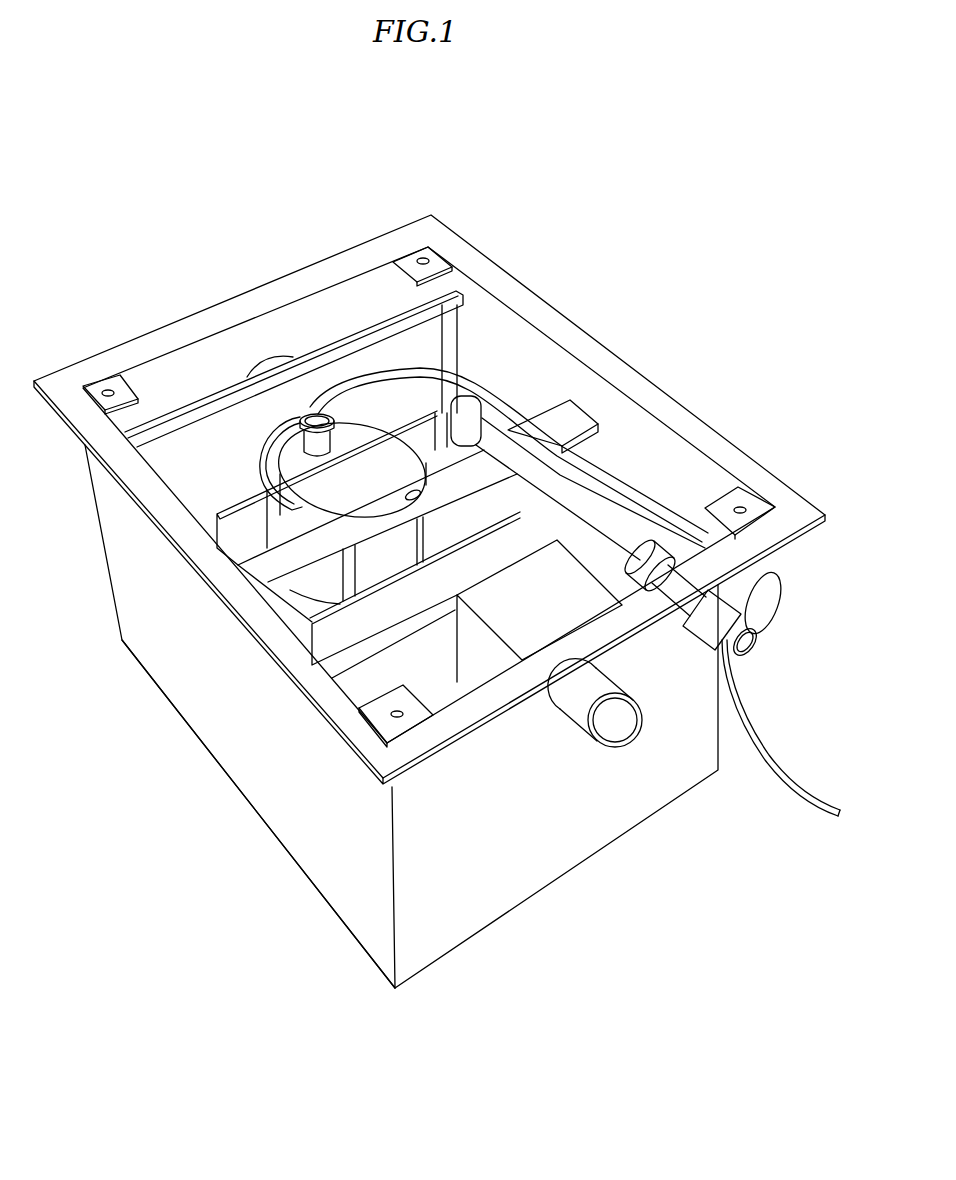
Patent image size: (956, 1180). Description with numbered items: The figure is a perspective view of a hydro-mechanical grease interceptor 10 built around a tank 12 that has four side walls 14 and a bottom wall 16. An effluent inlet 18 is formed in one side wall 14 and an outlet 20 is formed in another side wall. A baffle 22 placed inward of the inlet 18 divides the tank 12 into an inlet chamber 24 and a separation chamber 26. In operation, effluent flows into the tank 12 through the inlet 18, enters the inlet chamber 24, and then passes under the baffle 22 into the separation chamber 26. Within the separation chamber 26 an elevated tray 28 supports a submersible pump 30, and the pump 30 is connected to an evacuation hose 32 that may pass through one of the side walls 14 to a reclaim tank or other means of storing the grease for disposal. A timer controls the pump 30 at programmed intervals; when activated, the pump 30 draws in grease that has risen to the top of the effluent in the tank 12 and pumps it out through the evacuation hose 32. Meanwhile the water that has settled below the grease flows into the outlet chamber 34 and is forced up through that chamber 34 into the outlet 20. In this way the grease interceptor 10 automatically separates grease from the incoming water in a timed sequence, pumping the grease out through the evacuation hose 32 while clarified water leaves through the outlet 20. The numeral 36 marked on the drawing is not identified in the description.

The hydro-mechanical grease interceptor 10 is at (401, 730).
The tank 12 is at (300, 861).
The side walls 14 is at (275, 797).
The bottom wall 16 is at (468, 963).
The effluent inlet 18 is at (268, 360).
The outlet 20 is at (630, 735).
The baffle 22 is at (390, 322).
The inlet chamber 24 is at (192, 366).
The separation chamber 26 is at (205, 485).
The elevated tray 28 is at (307, 640).
The submersible pump 30 is at (383, 410).
The evacuation hose 32 is at (592, 478).
The outlet chamber 34 is at (561, 612).
The inlet port 36 is at (623, 743).